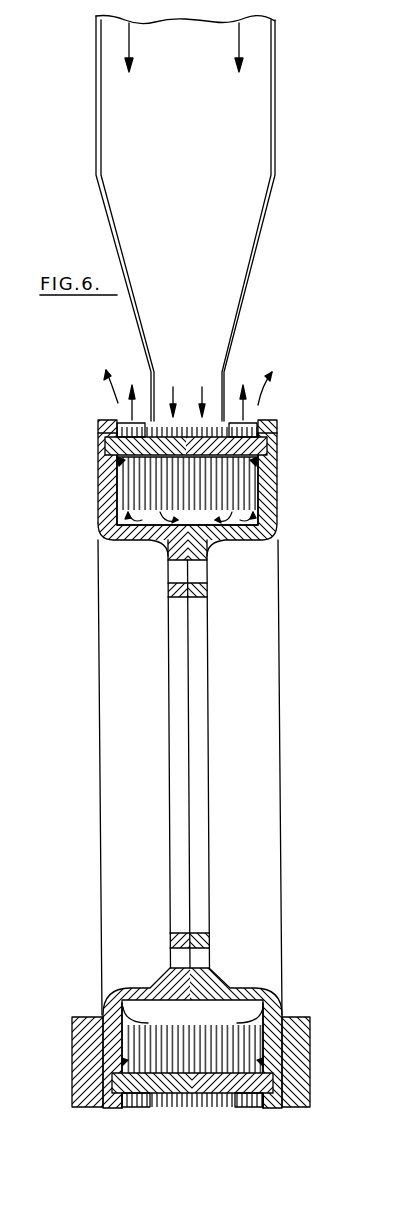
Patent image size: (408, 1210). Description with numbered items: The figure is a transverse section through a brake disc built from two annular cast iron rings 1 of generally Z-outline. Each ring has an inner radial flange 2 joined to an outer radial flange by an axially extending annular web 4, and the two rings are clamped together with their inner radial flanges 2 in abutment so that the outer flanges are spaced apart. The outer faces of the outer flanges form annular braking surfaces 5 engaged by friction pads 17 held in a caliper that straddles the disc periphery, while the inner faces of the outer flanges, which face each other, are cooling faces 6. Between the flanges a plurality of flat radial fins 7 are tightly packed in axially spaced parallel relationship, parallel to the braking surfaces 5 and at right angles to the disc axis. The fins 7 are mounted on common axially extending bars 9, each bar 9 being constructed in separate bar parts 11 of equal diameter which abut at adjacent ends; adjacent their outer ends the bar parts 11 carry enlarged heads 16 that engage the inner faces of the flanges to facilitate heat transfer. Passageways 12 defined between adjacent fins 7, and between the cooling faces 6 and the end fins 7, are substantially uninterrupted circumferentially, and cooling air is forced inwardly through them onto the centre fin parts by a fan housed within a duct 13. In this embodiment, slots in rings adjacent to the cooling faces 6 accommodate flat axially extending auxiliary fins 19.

The annular cast iron ring 1 is at (280, 526).
The inner radial flange 2 is at (207, 590).
The axially extending annular web 4 is at (162, 540).
The braking surface 5 is at (86, 1020).
The cooling face 6 is at (108, 498).
The radial fin 7 is at (243, 425).
The axially extending bar 9 is at (210, 447).
The bar part 11 is at (107, 430).
The passageway 12 is at (180, 430).
The duct 13 is at (268, 216).
The enlarged head 16 is at (108, 457).
The friction pad 17 is at (302, 1052).
The auxiliary fin 19 is at (128, 425).